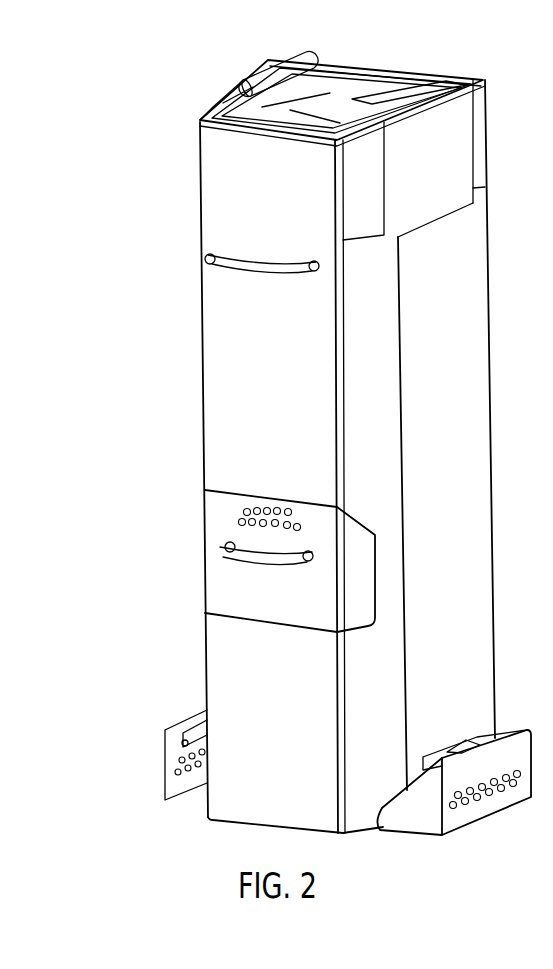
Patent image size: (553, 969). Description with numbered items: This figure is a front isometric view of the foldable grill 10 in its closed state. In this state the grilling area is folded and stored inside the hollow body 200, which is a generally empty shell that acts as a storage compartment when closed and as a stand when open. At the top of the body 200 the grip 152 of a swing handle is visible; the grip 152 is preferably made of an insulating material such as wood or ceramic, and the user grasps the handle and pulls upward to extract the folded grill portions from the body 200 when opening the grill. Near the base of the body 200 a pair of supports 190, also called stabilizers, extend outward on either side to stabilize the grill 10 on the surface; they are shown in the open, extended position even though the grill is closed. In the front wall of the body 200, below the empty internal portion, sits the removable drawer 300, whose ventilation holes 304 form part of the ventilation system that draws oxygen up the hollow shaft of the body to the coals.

The foldable grill 10 is at (155, 402).
The grip 152 is at (245, 80).
The support 190 is at (413, 812).
The body 200 is at (295, 367).
The drawer 300 is at (233, 580).
The ventilation holes 304 is at (240, 523).